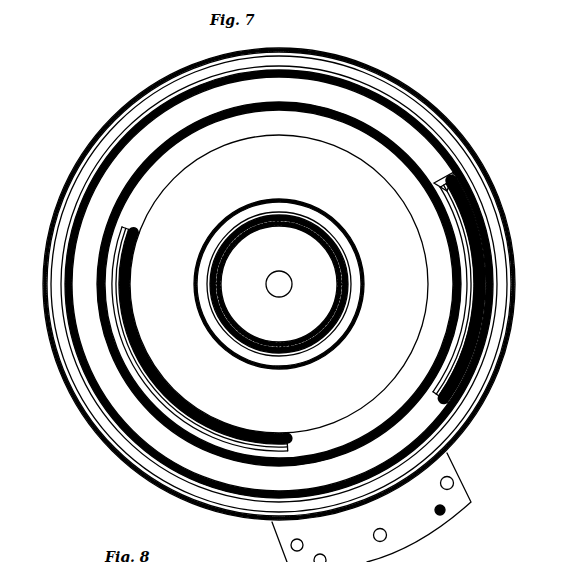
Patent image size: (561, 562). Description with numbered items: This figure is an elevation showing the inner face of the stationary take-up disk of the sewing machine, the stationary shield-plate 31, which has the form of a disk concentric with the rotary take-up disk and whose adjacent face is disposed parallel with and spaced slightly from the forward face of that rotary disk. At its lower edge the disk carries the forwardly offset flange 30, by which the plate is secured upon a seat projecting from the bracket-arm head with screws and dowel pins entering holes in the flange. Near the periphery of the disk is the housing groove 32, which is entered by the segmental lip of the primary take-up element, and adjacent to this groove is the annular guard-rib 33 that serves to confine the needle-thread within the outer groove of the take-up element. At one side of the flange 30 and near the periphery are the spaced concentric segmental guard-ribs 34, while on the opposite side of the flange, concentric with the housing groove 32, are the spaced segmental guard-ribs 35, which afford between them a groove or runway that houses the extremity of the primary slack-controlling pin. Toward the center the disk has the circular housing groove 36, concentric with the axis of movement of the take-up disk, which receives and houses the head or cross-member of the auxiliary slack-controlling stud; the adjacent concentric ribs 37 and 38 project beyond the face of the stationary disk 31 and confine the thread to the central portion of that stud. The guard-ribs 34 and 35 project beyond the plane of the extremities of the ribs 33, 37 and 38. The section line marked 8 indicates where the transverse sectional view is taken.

The section line 8- 8 is at (544, 240).
The forwardly offset flange 30 is at (371, 507).
The stationary shield-plate 31 is at (279, 284).
The housing groove 32 is at (488, 378).
The annular guard-rib 33 is at (418, 448).
The spaced concentric segmental guard-ribs 34 is at (462, 361).
The spaced segmental guard-ribs 35 is at (142, 374).
The circular housing groove 36 is at (344, 230).
The concentric rib 37 is at (353, 267).
The concentric rib 38 is at (346, 270).